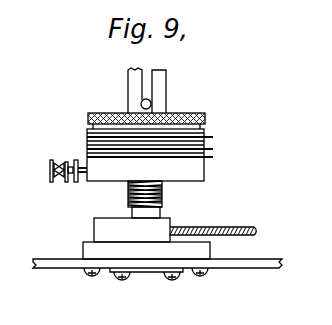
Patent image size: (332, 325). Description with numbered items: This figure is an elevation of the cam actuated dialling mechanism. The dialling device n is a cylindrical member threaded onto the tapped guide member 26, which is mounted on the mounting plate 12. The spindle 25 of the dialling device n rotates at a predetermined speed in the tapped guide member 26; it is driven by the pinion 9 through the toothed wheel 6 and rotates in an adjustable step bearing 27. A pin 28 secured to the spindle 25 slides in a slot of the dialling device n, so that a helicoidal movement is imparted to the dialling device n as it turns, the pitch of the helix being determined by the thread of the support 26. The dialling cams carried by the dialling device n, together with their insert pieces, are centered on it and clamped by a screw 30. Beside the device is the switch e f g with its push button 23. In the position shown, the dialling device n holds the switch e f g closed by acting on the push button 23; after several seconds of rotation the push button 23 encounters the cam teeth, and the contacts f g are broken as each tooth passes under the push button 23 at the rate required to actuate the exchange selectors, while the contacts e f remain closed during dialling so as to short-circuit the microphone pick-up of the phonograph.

The spindle 25 is at (166, 86).
The pin 28 is at (140, 103).
The screw 30 is at (205, 117).
The dialling device n is at (182, 173).
The switch contact e is at (50, 175).
The switch contact f is at (61, 160).
The switch contact g is at (80, 164).
The push button 23 is at (82, 178).
The pinion 9 is at (158, 200).
The tapped guide member 26 is at (97, 232).
The toothed wheel 6 is at (252, 225).
The mounting plate 12 is at (250, 266).
The adjustable step bearing 27 is at (147, 273).